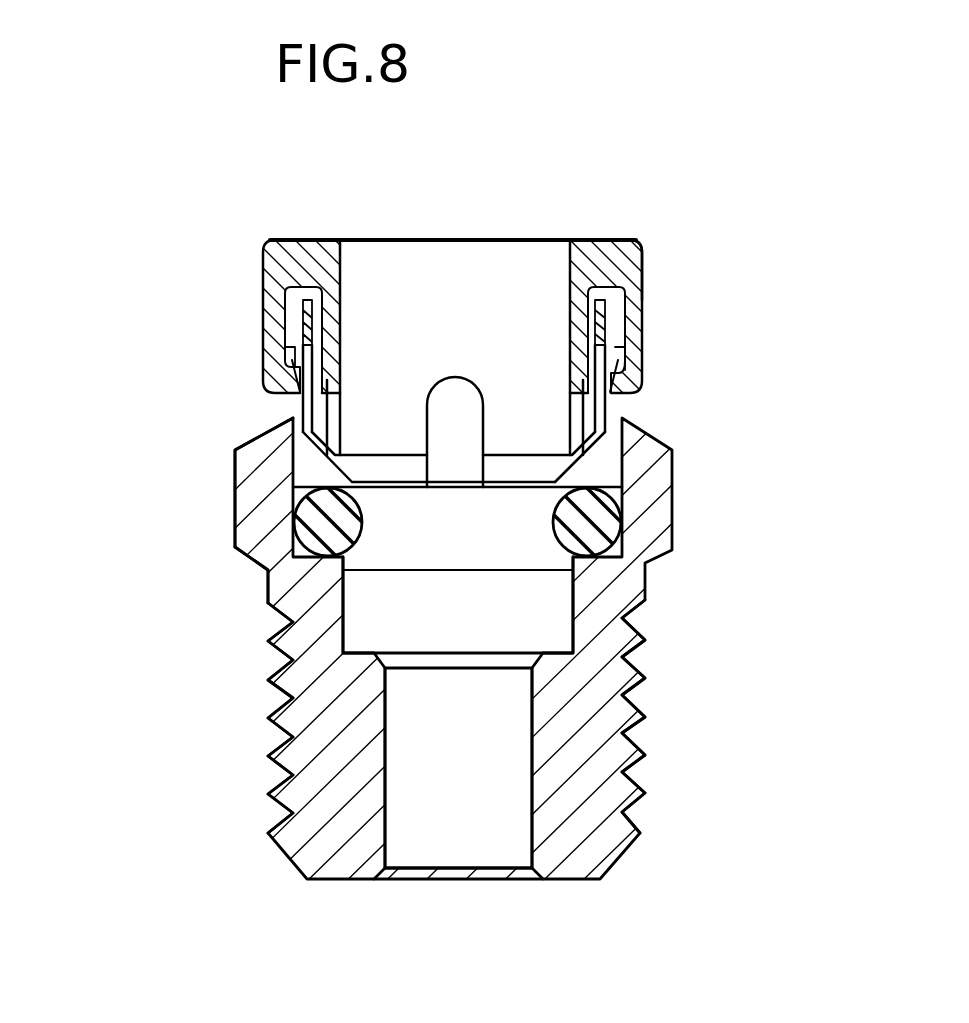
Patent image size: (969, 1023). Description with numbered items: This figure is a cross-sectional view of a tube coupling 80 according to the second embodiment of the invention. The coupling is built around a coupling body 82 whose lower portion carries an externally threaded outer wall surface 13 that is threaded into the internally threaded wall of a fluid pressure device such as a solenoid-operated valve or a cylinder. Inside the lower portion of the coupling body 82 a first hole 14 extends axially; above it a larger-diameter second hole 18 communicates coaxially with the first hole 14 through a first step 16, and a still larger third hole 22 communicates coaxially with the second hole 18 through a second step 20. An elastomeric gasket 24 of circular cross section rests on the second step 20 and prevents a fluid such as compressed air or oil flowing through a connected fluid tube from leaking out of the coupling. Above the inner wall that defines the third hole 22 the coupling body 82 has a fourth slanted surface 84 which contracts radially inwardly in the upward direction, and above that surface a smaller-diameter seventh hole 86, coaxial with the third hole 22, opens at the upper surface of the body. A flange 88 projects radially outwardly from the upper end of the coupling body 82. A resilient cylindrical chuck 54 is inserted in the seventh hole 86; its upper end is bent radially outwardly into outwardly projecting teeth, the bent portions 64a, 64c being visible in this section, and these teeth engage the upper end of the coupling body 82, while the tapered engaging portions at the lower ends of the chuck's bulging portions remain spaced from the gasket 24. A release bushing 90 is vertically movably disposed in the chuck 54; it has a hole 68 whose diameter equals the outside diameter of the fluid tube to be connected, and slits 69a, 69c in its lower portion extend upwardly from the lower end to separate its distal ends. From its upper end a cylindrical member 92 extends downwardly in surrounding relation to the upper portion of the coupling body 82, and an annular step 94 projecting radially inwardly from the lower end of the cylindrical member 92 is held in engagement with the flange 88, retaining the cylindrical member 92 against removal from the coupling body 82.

The externally threaded outer wall surface 13 is at (650, 715).
The first hole 14 is at (420, 812).
The first step 16 is at (340, 675).
The second hole 18 is at (355, 593).
The second step 20 is at (263, 577).
The third hole 22 is at (237, 502).
The elastomeric gasket 24 is at (605, 523).
The chuck 54 is at (600, 475).
The bent portion 64a is at (280, 290).
The bent portion 64c is at (640, 277).
The hole 68 is at (548, 262).
The slit 69a is at (345, 395).
The slit 69c is at (570, 407).
The tube coupling 80 is at (670, 133).
The coupling body 82 is at (668, 598).
The fourth slanted surface 84 is at (300, 400).
The seventh hole 86 is at (282, 368).
The flange 88 is at (287, 353).
The release bushing 90 is at (607, 238).
The cylindrical member 92 is at (640, 327).
The annular step 94 is at (640, 380).